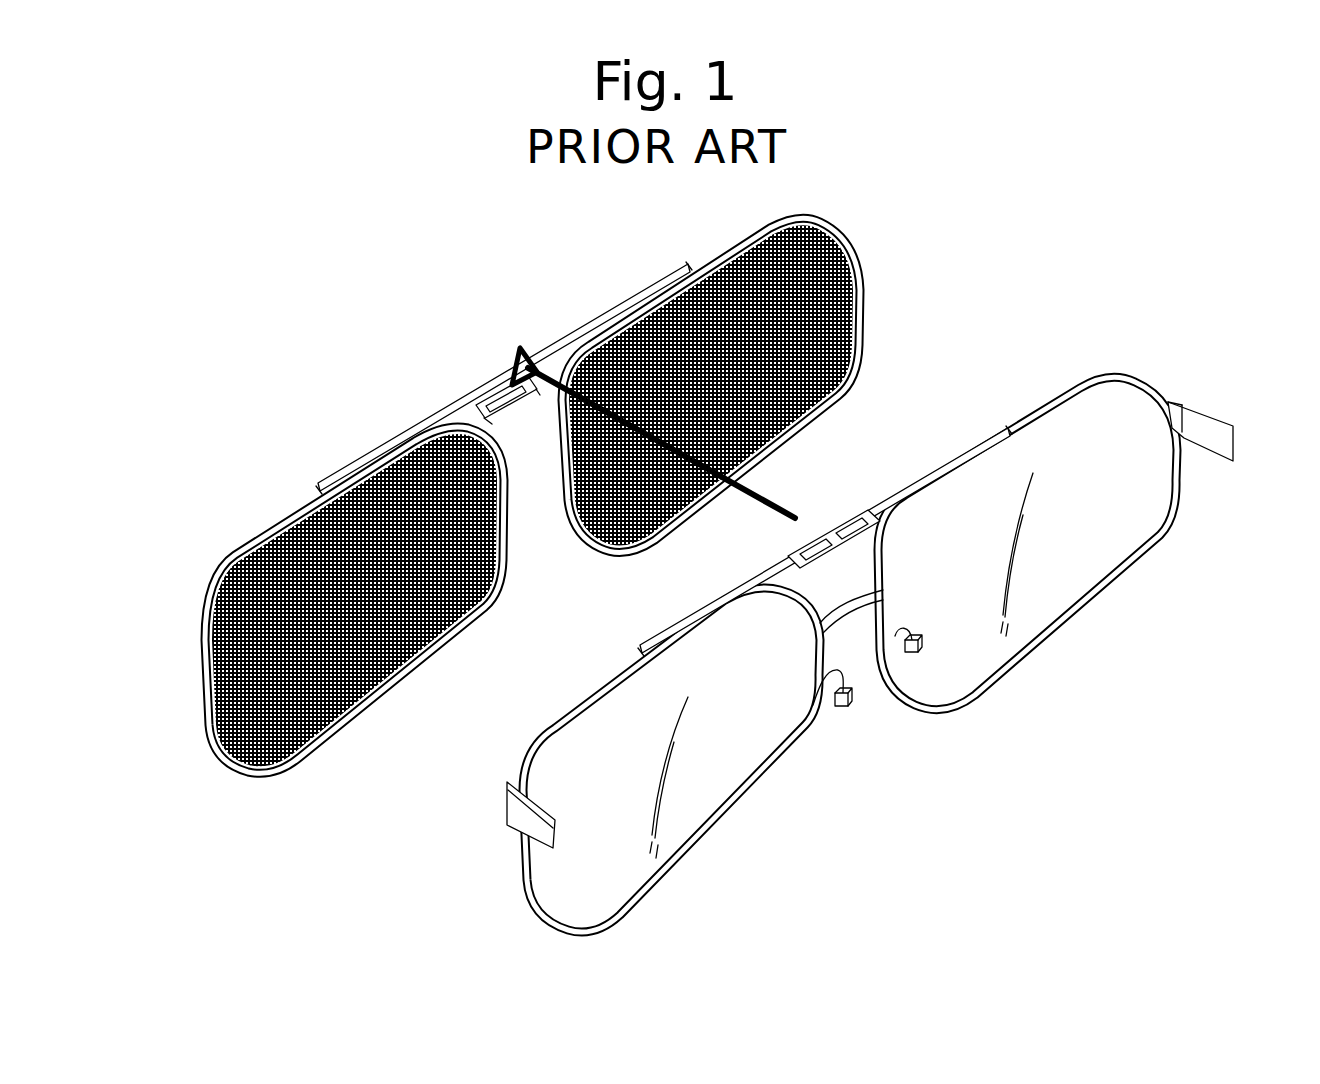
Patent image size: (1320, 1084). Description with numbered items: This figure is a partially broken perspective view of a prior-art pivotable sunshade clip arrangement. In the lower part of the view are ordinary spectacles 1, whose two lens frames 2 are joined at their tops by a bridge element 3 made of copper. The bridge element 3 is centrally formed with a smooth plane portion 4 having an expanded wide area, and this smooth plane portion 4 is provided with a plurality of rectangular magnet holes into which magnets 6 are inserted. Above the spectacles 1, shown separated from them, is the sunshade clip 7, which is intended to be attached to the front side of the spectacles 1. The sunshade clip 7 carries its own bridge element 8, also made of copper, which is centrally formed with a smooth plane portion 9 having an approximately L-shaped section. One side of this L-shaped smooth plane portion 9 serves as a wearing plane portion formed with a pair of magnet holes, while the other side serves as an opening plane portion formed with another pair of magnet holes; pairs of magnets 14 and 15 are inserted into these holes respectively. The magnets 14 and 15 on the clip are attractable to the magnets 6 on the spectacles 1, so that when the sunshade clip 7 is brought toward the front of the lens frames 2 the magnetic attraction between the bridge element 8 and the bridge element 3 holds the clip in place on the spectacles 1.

The spectacles 1 is at (870, 654).
The lens frames 2 is at (733, 856).
The bridge element 3 is at (690, 615).
The smooth plane portion 4 is at (833, 540).
The magnets 6 is at (870, 518).
The sunshade clip 7 is at (532, 495).
The bridge element 8 is at (453, 410).
The smooth plane portion 9 is at (508, 397).
The magnets 14 is at (500, 398).
The magnets 15 is at (500, 418).